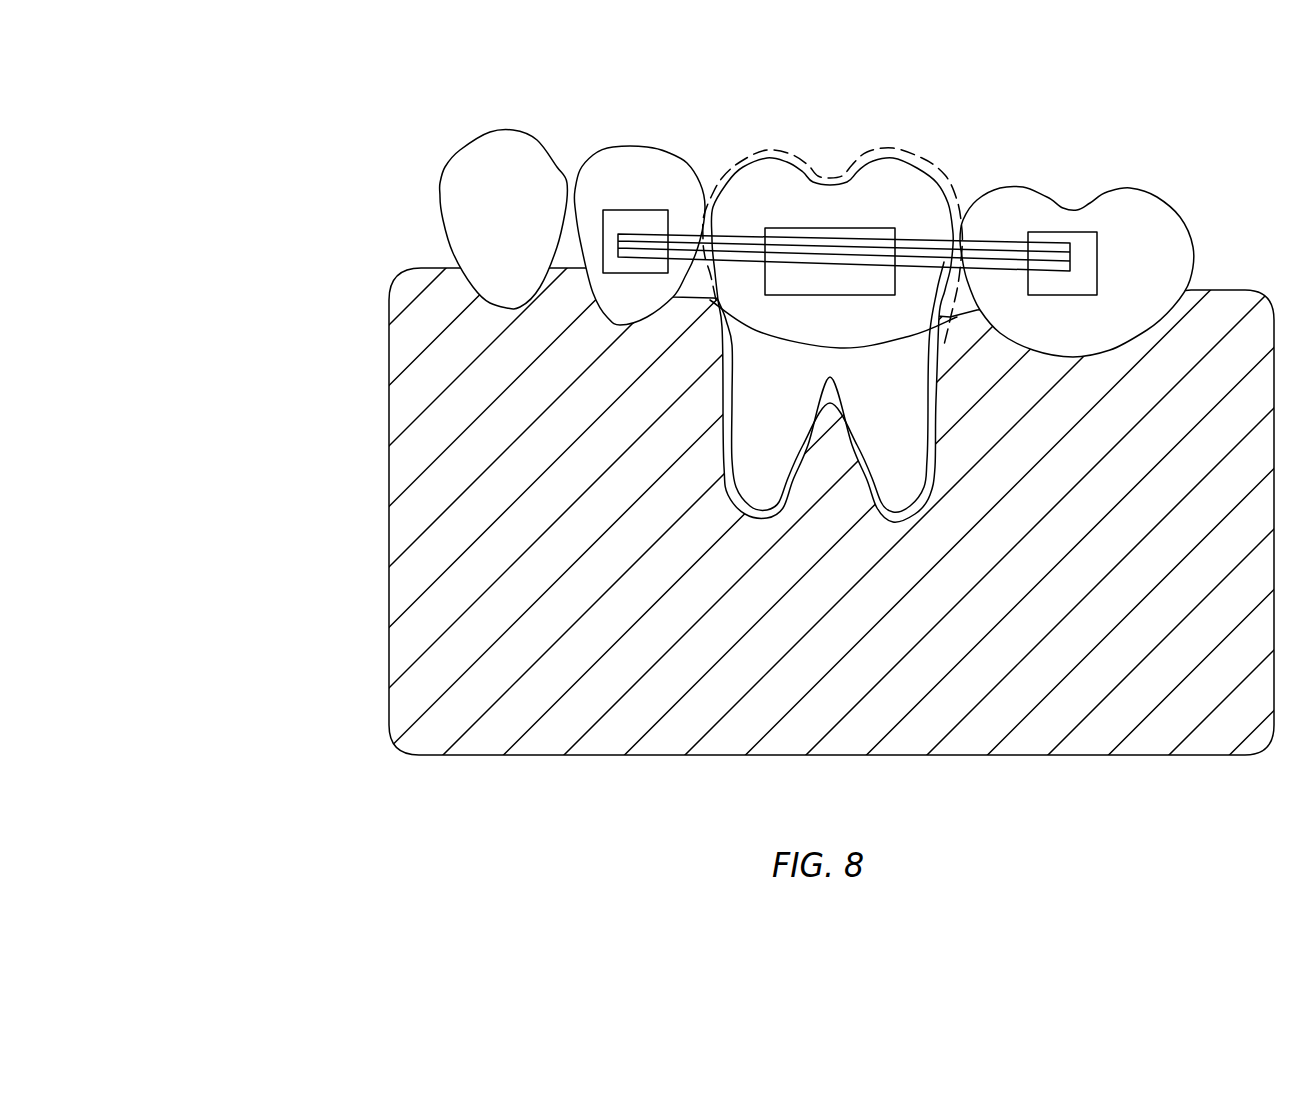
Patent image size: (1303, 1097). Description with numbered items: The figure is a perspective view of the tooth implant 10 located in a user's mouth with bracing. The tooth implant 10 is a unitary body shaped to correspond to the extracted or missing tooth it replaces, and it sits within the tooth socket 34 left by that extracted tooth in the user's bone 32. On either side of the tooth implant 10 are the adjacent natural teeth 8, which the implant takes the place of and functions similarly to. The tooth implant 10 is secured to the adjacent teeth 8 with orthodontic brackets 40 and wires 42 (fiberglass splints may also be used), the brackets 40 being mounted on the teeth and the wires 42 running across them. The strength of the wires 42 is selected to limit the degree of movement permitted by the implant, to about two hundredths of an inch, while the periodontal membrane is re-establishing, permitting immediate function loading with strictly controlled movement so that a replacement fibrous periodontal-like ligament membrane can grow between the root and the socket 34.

The natural teeth 8 is at (653, 147).
The tooth implant 10 is at (836, 145).
The bone 32 is at (413, 630).
The tooth socket 34 is at (920, 510).
The orthodontic brackets 40 is at (657, 212).
The wires 42 is at (995, 255).